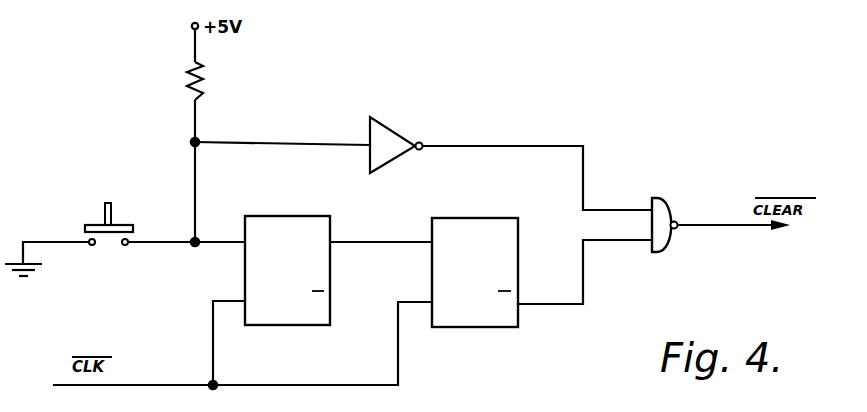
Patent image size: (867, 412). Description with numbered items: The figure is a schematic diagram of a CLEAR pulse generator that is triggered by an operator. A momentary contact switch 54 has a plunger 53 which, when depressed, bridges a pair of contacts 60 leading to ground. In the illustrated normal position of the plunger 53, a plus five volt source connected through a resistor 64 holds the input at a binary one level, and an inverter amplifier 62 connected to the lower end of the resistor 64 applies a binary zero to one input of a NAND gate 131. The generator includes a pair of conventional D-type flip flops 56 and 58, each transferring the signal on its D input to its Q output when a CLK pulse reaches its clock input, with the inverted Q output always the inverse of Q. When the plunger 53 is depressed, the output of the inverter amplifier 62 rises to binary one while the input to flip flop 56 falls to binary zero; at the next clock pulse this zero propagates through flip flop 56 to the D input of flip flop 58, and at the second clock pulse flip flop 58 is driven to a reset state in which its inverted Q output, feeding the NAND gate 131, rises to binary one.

The plunger 53 is at (108, 204).
The momentary contact switch 54 is at (72, 229).
The contacts 60 is at (110, 247).
The resistor 64 is at (205, 96).
The inverter amplifier 62 is at (386, 121).
The D-type flip flop 56 is at (288, 326).
The D-type flip flop 58 is at (487, 328).
The NAND gate 131 is at (668, 200).